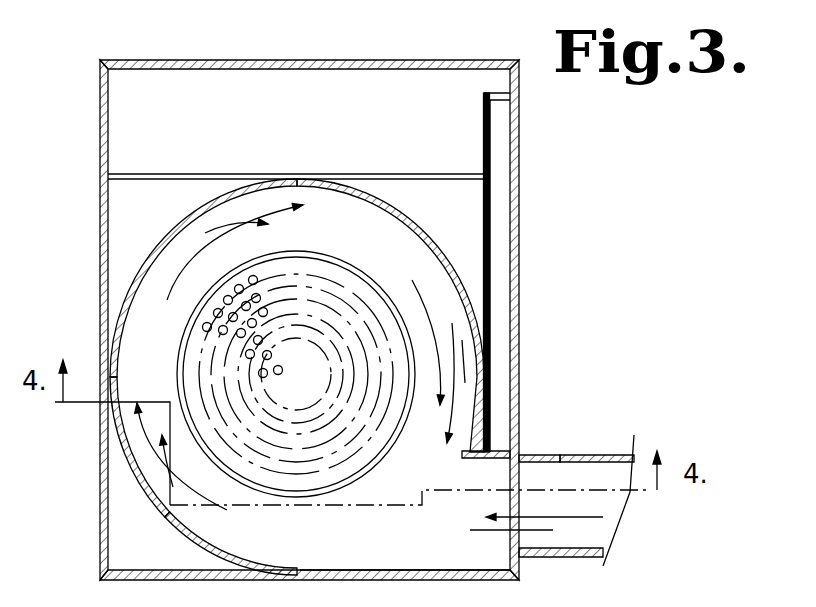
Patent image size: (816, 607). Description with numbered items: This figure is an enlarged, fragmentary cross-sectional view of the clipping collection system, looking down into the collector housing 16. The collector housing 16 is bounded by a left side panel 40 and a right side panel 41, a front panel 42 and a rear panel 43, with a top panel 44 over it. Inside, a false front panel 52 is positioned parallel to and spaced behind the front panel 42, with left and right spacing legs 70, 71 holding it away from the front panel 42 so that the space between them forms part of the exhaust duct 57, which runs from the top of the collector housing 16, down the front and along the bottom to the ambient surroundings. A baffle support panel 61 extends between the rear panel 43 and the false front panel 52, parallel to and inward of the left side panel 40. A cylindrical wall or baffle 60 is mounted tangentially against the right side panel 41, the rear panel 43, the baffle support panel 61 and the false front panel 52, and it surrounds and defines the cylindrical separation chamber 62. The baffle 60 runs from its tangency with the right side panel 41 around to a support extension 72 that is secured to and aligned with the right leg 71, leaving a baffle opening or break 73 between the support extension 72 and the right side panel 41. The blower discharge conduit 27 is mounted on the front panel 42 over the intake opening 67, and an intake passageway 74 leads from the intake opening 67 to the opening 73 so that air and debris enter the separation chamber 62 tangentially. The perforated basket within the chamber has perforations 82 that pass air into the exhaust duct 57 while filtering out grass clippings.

The collector housing 16 is at (307, 313).
The left side panel 40 is at (304, 60).
The right side panel 41 is at (195, 582).
The front panel 42 is at (519, 258).
The rear panel 43 is at (100, 222).
The baffle support panel 61 is at (205, 174).
The cylindrical wall or baffle 60 is at (176, 232).
The cylindrical separation chamber 62 is at (197, 524).
The false front panel 52 is at (484, 224).
The left spacing leg 70 is at (487, 93).
The right spacing leg 71 is at (500, 440).
The support extension 72 is at (476, 456).
The baffle opening or break 73 is at (300, 574).
The intake passageway 74 is at (472, 570).
The intake opening 67 is at (520, 465).
The blower discharge conduit 27 is at (576, 437).
The top panel 44 is at (540, 606).
The exhaust duct 57 is at (552, 521).
The perforations 82 is at (283, 371).